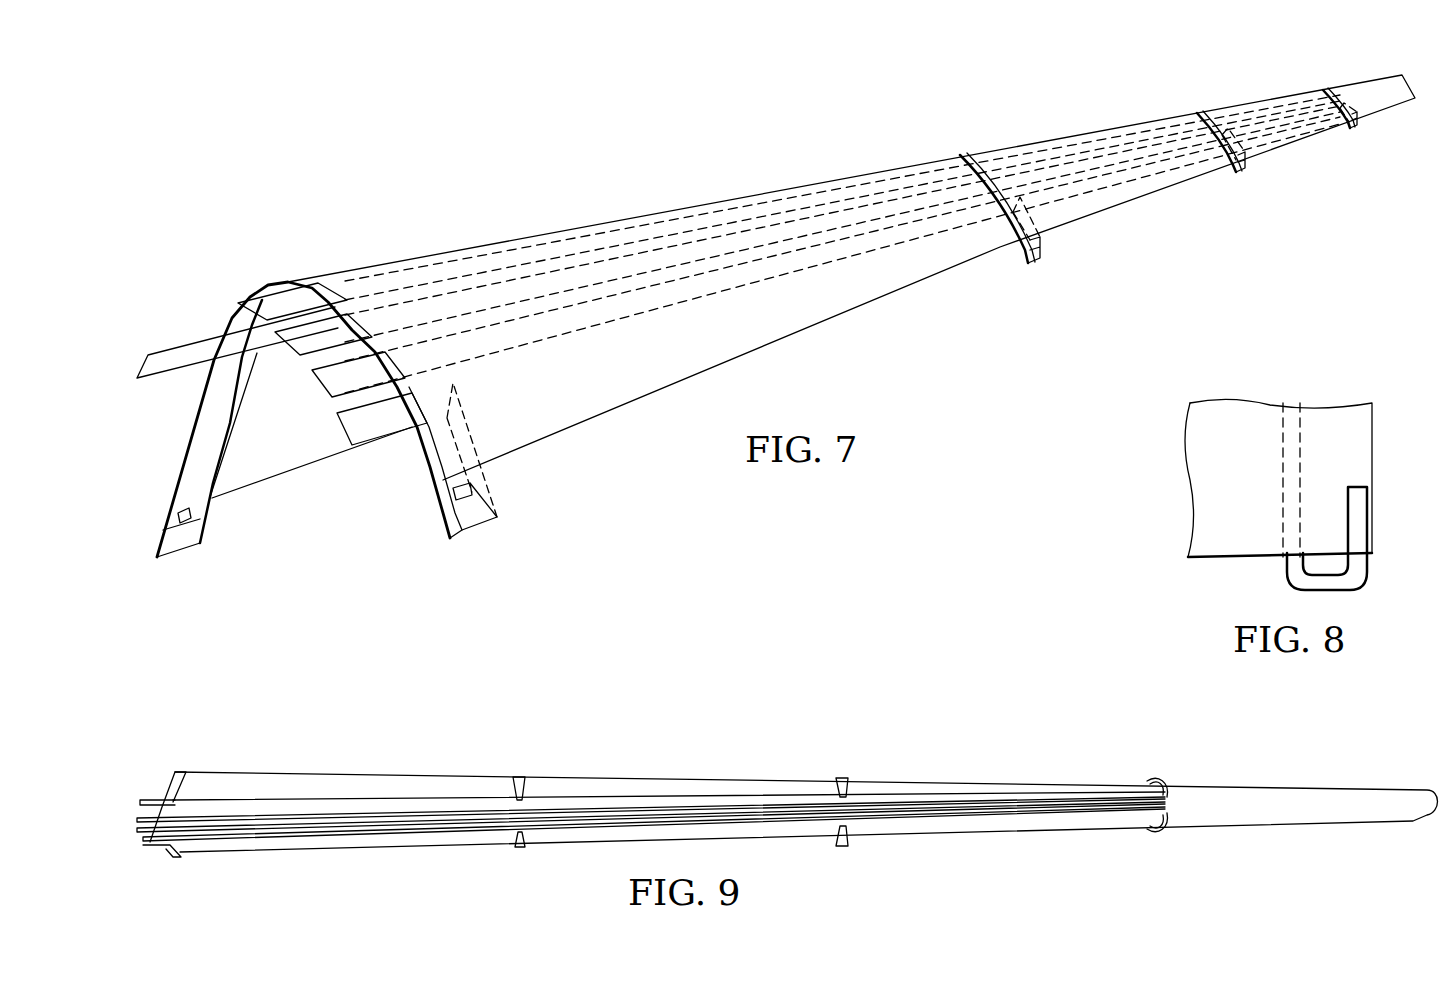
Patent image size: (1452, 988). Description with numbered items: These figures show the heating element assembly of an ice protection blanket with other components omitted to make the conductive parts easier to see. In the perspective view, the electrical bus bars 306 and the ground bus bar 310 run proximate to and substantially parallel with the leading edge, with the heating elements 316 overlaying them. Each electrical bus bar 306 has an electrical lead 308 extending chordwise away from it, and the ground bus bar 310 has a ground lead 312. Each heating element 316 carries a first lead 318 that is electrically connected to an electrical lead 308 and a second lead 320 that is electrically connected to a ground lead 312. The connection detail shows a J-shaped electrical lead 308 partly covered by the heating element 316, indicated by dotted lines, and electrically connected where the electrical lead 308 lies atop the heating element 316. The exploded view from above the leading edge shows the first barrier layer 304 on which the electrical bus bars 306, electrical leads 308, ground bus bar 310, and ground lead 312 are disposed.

In FIG. 9, the first barrier layer 304 is at (322, 782).
In FIG. 7, the electrical bus bars 306 is at (545, 292).
In FIG. 9, the electrical bus bars 306 is at (138, 820).
In FIG. 7, the electrical lead 308 is at (480, 508).
In FIG. 8, the electrical lead 308 is at (1350, 487).
In FIG. 9, the electrical lead 308 is at (172, 860).
In FIG. 7, the ground bus bar 310 is at (143, 366).
In FIG. 9, the ground bus bar 310 is at (138, 800).
In FIG. 7, the ground lead 312 is at (178, 540).
In FIG. 9, the ground lead 312 is at (176, 770).
In FIG. 7, the heating element 316 is at (310, 434).
In FIG. 8, the heating element 316 is at (1257, 492).
In FIG. 7, the first lead 318 is at (447, 496).
In FIG. 7, the second lead 320 is at (178, 518).